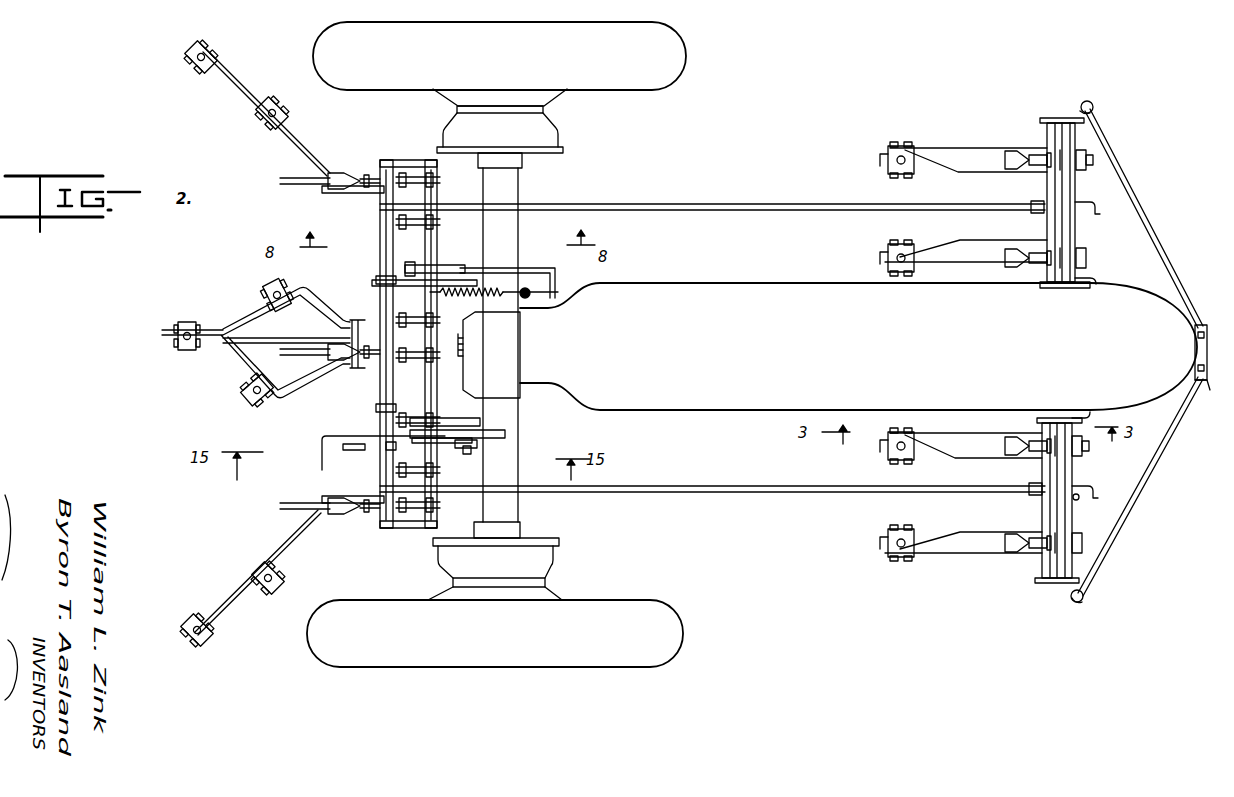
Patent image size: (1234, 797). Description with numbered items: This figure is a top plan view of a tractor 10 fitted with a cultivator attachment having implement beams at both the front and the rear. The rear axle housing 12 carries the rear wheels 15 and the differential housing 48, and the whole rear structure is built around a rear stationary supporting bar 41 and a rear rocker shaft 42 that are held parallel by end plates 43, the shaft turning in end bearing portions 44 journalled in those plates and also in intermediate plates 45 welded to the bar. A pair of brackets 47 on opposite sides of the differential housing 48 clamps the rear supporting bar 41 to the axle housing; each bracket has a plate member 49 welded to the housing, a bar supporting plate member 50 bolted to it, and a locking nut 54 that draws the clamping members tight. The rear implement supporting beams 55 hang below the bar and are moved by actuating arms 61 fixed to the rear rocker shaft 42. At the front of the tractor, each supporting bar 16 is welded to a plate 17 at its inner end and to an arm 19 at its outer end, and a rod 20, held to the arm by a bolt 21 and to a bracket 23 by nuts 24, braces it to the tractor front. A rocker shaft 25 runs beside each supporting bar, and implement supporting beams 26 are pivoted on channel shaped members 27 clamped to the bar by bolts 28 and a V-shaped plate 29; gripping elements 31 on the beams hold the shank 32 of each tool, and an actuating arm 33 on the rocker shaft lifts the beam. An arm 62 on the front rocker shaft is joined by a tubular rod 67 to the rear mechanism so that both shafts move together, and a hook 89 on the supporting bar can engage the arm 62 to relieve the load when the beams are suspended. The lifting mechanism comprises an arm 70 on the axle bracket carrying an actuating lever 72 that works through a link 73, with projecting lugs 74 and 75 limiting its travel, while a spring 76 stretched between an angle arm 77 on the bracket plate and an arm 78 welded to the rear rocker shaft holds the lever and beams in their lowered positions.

The tractor 10 is at (718, 283).
The rear axle housing 12 is at (518, 193).
The rear wheels 15 is at (690, 65).
The supporting bars 16 is at (1076, 234).
The plate 17 is at (1096, 288).
The arm 19 is at (1058, 120).
The rod 20 is at (1150, 222).
The bolt 21 is at (1092, 104).
The bracket 23 is at (1208, 390).
The nuts 24 is at (1200, 325).
The rocker shaft 25 is at (1040, 130).
The implement supporting beams 26 is at (950, 148).
The channel shaped members 27 is at (1086, 168).
The bolts 28 is at (1094, 160).
The plate 29 is at (1065, 150).
The gripping elements 31 is at (900, 244).
The shank 32 is at (898, 178).
The actuating arm 33 is at (1028, 170).
The rear stationary supporting bar 41 is at (437, 236).
The rear rocker shaft 42 is at (380, 222).
The end plates 43 is at (428, 160).
The end bearing portions 44 is at (386, 160).
The intermediate plates 45 is at (376, 280).
The brackets 47 is at (462, 265).
The differential housing 48 is at (489, 355).
The plate member 49 is at (475, 420).
The bar supporting plate member 50 is at (470, 434).
The locking nut 54 is at (425, 222).
The implement supporting beams 55 is at (295, 140).
The actuating arms 61 is at (359, 173).
The arm 62 is at (1044, 206).
The tubular rod 67 is at (665, 205).
The arm 70 is at (477, 444).
The actuating lever 72 is at (326, 436).
The link 73 is at (352, 450).
The projecting lug 74 is at (467, 454).
The projecting lug 75 is at (392, 450).
The spring 76 is at (455, 294).
The angle arm 77 is at (555, 272).
The arm 78 is at (405, 280).
The hook 89 is at (1100, 212).